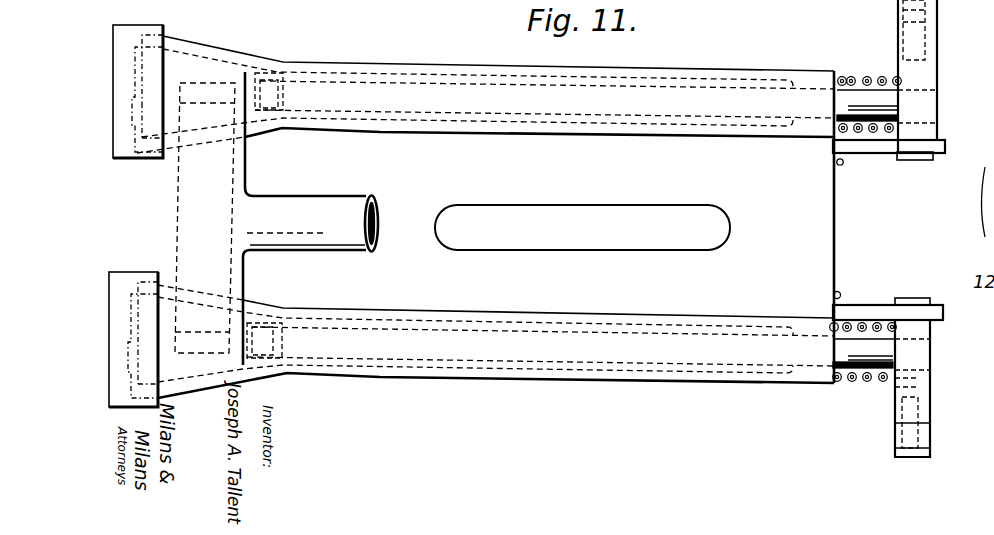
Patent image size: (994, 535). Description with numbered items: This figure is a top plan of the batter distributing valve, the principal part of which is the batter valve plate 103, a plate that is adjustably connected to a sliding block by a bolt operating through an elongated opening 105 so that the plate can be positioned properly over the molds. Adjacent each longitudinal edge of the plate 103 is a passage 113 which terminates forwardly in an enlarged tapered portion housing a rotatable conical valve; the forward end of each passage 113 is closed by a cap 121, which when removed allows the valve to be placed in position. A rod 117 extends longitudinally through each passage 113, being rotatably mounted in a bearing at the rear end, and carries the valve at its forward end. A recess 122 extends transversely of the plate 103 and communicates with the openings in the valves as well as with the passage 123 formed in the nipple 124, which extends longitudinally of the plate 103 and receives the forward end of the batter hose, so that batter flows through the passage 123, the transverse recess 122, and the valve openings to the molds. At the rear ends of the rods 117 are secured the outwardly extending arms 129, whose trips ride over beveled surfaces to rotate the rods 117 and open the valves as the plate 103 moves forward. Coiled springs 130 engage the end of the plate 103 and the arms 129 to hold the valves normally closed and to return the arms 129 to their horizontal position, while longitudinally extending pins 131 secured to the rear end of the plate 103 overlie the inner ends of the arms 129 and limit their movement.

The batter valve plate 103 is at (818, 212).
The elongated opening 105 is at (582, 227).
The passage 113 is at (679, 71).
The rod 117 is at (847, 100).
The cap 121 is at (150, 92).
The recess 122 is at (229, 215).
The passage 123 is at (378, 230).
The nipple 124 is at (344, 200).
The arms 129 is at (930, 76).
The coiled springs 130 is at (897, 80).
The pins 131 is at (948, 148).